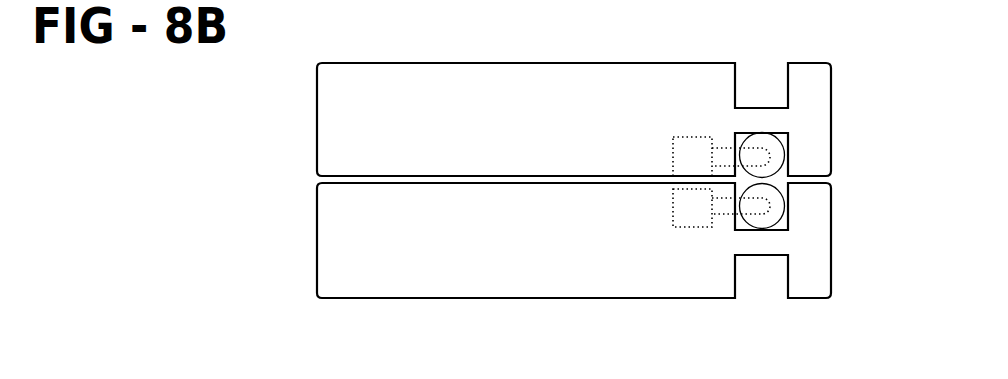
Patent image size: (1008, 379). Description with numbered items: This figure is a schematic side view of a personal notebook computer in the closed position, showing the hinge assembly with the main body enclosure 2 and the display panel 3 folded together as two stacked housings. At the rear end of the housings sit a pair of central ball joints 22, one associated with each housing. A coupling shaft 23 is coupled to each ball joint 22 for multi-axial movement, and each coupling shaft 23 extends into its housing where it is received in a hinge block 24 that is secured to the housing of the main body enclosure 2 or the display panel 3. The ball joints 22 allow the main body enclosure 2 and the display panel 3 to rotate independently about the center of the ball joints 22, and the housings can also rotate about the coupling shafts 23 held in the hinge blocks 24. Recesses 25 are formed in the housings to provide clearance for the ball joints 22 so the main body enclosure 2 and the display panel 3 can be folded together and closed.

The main body enclosure 2 is at (317, 242).
The display panel 3 is at (317, 123).
The central ball joint 22 is at (780, 152).
The coupling shaft 23 is at (727, 148).
The hinge block 24 is at (672, 158).
The recess 25 is at (778, 52).